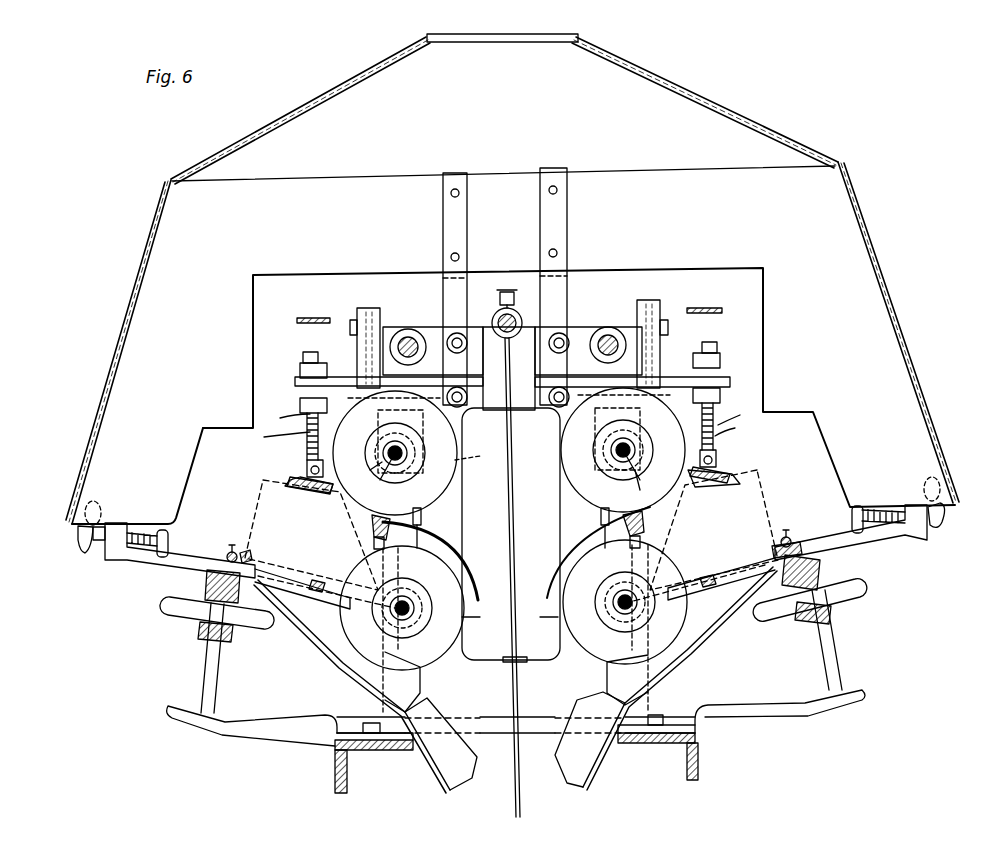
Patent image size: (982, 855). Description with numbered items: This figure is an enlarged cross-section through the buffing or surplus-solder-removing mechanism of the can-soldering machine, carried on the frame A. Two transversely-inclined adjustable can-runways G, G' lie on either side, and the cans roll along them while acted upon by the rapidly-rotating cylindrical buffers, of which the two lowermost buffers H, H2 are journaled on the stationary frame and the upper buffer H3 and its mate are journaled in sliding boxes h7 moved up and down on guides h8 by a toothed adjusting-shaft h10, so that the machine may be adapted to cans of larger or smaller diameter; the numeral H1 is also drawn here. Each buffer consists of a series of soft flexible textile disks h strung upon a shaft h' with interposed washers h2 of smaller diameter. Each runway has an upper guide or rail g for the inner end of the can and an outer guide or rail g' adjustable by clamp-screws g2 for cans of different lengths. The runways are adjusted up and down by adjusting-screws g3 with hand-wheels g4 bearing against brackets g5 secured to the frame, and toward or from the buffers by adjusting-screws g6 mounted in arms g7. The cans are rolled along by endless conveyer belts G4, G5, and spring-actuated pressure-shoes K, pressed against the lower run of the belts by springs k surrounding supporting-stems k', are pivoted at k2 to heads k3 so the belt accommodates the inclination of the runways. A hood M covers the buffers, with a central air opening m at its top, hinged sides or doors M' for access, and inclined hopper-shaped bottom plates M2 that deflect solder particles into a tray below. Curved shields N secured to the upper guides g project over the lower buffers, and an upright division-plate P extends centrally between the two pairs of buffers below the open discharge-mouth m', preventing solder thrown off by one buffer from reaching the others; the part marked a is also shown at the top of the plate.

The hood M is at (513, 280).
The hinged sides or doors M' is at (512, 343).
The central opening m is at (502, 51).
The open discharge-mouth m' is at (503, 577).
The needle guide a is at (512, 310).
The toothed adjusting-shaft h10 is at (408, 329).
The endless flexible conveyer G4 is at (314, 317).
The endless flexible conveyer G5 is at (708, 309).
The head k3 is at (323, 456).
The supporting-stem k' is at (506, 422).
The spring k is at (495, 426).
The pivotal connection k2 is at (710, 490).
The spring-actuated pressure-shoe K is at (285, 478).
The upper left roller H1 is at (395, 453).
The rotary cylindrical buffer H3 is at (623, 450).
The rotary cylindrical buffer H is at (402, 629).
The rotary cylindrical buffer H2 is at (625, 626).
The sliding box h7 is at (590, 465).
The shaft h' is at (518, 477).
The washer h2 is at (497, 473).
The soft flexible textile disk h is at (510, 552).
The guide h8 is at (511, 523).
The upright division-plate P is at (512, 515).
The curved shield N is at (545, 580).
The upper guide or rail g is at (508, 523).
The can-runway G is at (320, 544).
The can-runway G' is at (704, 536).
The outer guide or rail g' is at (495, 526).
The clamp-screw g2 is at (818, 516).
The arm g7 is at (905, 545).
The adjusting-screw g6 is at (950, 540).
The adjusting-screw g3 is at (858, 640).
The hand-wheel g4 is at (775, 625).
The bracket g5 is at (798, 716).
The inclined or hopper-shaped bottom plate M2 is at (710, 652).
The frame A is at (380, 752).